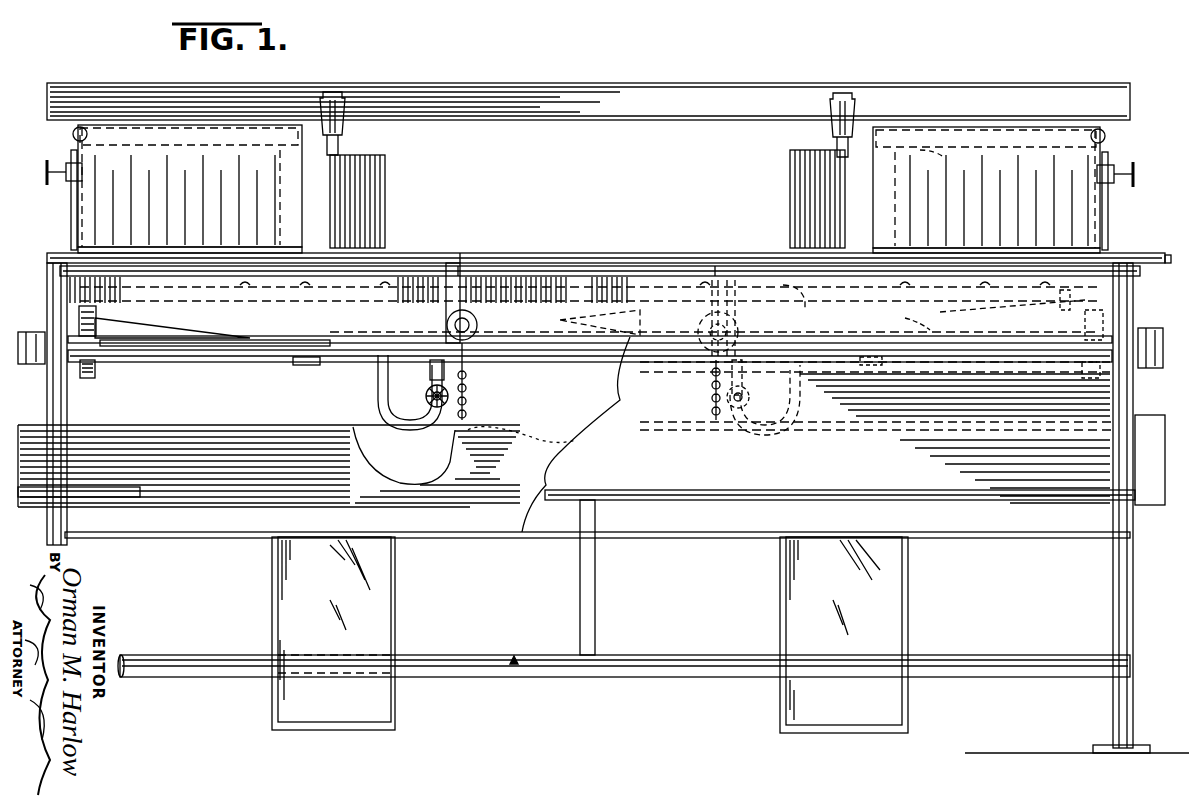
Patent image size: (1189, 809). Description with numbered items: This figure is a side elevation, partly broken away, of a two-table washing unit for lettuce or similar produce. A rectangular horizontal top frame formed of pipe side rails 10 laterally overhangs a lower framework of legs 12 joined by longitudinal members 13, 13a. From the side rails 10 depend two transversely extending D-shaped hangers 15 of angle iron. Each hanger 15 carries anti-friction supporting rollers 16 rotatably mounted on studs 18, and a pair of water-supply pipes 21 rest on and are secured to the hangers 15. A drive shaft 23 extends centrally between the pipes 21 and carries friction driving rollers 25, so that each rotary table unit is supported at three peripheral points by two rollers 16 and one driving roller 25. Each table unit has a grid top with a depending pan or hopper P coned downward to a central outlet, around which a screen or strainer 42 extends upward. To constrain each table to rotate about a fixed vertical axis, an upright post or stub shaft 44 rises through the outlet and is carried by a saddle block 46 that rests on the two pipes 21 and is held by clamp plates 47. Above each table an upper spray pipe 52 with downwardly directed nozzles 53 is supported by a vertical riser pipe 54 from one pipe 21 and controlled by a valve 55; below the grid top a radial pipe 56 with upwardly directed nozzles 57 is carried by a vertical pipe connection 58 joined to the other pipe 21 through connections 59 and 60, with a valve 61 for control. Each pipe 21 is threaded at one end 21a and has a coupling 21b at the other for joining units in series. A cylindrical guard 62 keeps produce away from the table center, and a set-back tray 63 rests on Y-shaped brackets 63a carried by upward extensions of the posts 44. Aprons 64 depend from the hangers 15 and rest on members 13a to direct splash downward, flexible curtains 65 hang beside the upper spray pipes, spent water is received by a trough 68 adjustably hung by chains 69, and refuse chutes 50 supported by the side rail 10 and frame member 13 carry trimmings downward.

The side rails 10 is at (565, 262).
The legs 12 is at (48, 392).
The longitudinal members 13 is at (172, 655).
The longitudinal members 13a is at (788, 490).
The D-shaped hangers 15 is at (466, 358).
The anti-friction supporting rollers 16 is at (478, 340).
The studs 18 is at (478, 328).
The water-supply pipes 21 is at (605, 362).
The threaded end 21a is at (30, 334).
The coupling 21b is at (1148, 370).
The drive shaft 23 is at (580, 318).
The driving rollers 25 is at (93, 378).
The screen or strainer 42 is at (768, 318).
The upright post or stub shaft 44 is at (832, 150).
The saddle block 46 is at (328, 332).
The clamp plates 47 is at (305, 365).
The refuse chutes 50 is at (292, 582).
The upper spray pipe 52 is at (186, 142).
The spray openings or nozzles 53 is at (970, 148).
The vertical riser pipe 54 is at (70, 208).
The control valve 55 is at (50, 170).
The radial pipe 56 is at (975, 312).
The spray openings or nozzles 57 is at (1021, 310).
The vertical pipe connection 58 is at (380, 386).
The pipe connection 59 is at (430, 372).
The pipe connection 60 is at (760, 435).
The valve 61 is at (426, 398).
The cylindrical guard 62 is at (372, 210).
The set-back tray 63 is at (498, 100).
The Y-shaped supporting brackets 63a is at (346, 123).
The aprons or shields 64 is at (530, 476).
The vertical flexible curtains 65 is at (290, 210).
The trough 68 is at (228, 455).
The chains 69 is at (468, 400).
The pan or hopper P is at (150, 326).